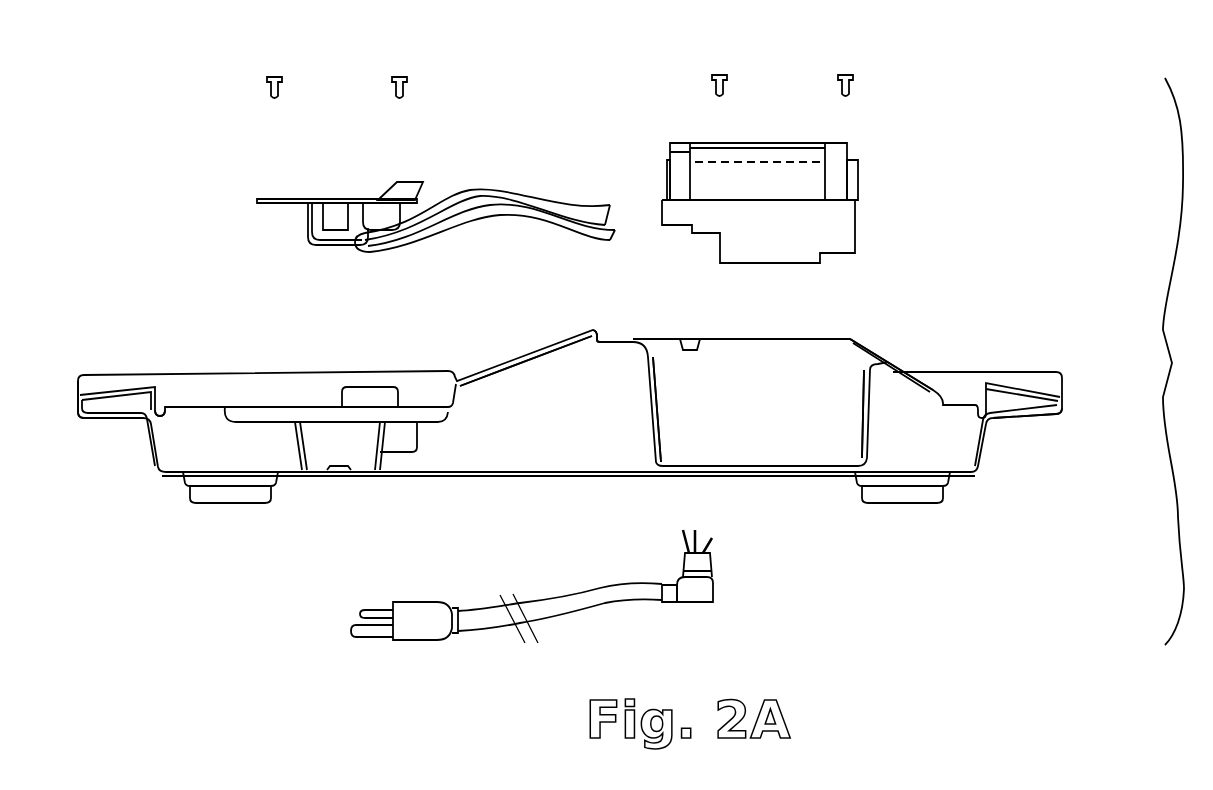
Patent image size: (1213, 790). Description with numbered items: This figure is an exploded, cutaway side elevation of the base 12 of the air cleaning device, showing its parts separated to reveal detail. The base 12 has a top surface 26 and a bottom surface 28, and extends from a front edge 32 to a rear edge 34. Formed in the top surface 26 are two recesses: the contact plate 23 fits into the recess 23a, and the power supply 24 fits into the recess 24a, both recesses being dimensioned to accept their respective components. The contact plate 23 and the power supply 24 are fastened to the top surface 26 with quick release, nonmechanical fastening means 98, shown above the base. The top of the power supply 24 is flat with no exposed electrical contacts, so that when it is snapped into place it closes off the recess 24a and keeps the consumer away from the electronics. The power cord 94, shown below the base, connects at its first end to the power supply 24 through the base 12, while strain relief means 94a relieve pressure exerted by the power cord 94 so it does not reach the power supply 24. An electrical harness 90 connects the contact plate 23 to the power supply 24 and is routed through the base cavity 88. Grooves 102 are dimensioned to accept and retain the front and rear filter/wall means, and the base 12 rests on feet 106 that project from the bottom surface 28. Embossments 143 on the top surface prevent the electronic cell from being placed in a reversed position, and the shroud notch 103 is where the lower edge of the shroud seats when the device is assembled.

The base 12 is at (577, 373).
The contact plate 23 is at (312, 202).
The recess 23a is at (356, 446).
The power supply 24 is at (860, 180).
The recess 24a is at (758, 409).
The top surface 26 is at (1032, 373).
The bottom surface 28 is at (497, 477).
The front edge 32 is at (73, 412).
The rear edge 34 is at (1067, 397).
The base cavity 88 is at (526, 379).
The electrical harness 90 is at (492, 200).
The power cord 94 is at (643, 603).
The strain relief means 94a is at (713, 590).
The quick release, nonmechanical fastening means 98 is at (283, 80).
The grooves 102 is at (163, 412).
The shroud notch 103 is at (600, 338).
The feet 106 is at (237, 502).
The embossments 143 is at (377, 387).